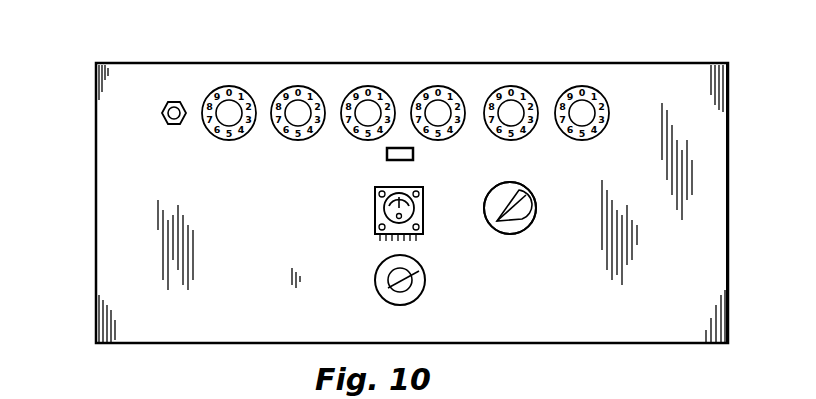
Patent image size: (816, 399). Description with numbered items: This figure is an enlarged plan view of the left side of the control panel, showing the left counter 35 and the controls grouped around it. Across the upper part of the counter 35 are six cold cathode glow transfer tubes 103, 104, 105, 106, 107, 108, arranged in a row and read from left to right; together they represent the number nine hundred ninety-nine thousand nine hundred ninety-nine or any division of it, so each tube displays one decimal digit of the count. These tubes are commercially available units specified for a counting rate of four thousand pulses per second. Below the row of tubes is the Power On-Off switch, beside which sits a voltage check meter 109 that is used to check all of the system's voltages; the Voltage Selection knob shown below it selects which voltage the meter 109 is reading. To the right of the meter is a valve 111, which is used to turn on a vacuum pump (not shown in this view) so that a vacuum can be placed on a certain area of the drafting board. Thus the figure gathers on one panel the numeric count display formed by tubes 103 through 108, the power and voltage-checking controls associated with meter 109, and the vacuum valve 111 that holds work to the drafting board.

The left counter 35 is at (96, 196).
The cold cathode glow transfer tube 103 is at (234, 86).
The cold cathode glow transfer tube 104 is at (303, 86).
The cold cathode glow transfer tube 105 is at (371, 86).
The cold cathode glow transfer tube 106 is at (443, 86).
The cold cathode glow transfer tube 107 is at (516, 86).
The cold cathode glow transfer tube 108 is at (587, 86).
The voltage check meter 109 is at (425, 197).
The valve 111 is at (532, 191).